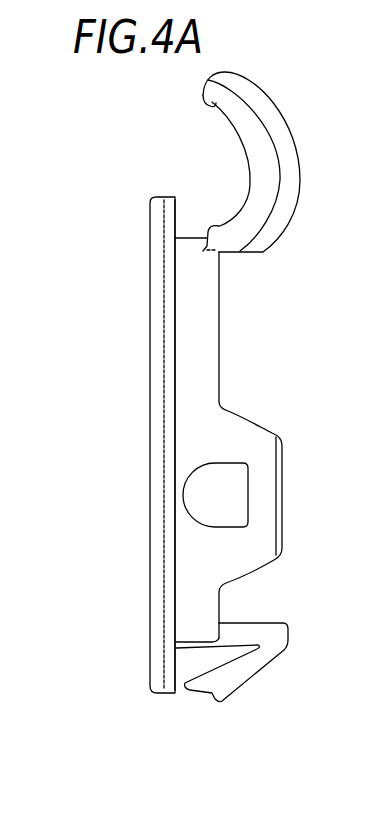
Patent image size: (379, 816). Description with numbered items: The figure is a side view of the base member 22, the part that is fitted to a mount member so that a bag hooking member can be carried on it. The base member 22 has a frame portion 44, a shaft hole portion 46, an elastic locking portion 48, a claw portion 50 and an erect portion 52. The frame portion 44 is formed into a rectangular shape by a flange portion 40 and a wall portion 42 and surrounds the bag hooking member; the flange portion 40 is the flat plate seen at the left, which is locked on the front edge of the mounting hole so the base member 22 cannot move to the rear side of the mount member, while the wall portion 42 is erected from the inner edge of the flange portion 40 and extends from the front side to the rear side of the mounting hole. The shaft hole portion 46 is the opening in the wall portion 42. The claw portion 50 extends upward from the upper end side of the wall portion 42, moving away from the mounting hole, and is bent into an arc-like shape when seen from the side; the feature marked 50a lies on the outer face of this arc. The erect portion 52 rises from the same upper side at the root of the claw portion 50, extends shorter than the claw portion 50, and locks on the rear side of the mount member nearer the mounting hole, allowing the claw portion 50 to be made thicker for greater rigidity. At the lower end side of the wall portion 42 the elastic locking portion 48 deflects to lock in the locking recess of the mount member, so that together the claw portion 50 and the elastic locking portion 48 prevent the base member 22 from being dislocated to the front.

The base member 22 is at (231, 739).
The flange portion 40 is at (158, 467).
The wall portion 42 is at (190, 384).
The frame portion 44 is at (83, 372).
The shaft hole portion 46 is at (215, 523).
The elastic locking portion 48 is at (255, 685).
The claw portion 50 is at (260, 125).
The hook edge 50a is at (288, 176).
The erect portion 52 is at (213, 223).